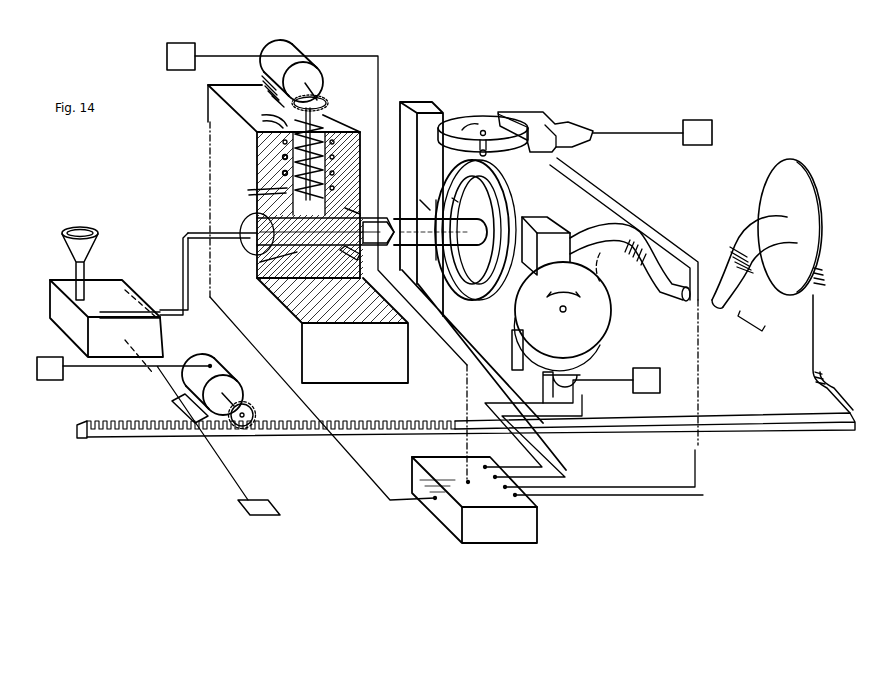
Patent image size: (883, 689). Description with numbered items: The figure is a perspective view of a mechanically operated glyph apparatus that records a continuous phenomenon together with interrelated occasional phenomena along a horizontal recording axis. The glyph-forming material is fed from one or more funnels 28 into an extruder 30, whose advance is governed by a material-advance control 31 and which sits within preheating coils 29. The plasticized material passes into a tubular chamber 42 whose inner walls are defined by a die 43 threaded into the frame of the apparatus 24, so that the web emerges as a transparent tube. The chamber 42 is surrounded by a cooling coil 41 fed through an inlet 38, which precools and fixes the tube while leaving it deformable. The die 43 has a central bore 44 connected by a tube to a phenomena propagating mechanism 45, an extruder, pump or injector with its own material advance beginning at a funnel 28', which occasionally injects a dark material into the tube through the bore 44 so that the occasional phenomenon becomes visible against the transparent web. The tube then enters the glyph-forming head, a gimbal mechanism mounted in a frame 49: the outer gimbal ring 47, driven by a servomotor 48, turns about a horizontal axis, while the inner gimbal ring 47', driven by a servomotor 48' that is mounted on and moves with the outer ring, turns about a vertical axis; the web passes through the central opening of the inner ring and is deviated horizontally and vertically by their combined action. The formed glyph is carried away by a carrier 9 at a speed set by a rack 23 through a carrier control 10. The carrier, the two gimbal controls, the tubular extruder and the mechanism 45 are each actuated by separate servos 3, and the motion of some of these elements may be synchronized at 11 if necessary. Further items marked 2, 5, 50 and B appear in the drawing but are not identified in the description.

The extruded filament 2 is at (456, 236).
The servo 3 is at (374, 279).
The conduit hose 5 is at (701, 267).
The carrier 9 is at (796, 162).
The carrier control 10 is at (238, 389).
The synchronizing means 11 is at (537, 531).
The rack 23 is at (148, 437).
The frame of the apparatus 24 is at (241, 220).
The funnel 28 is at (330, 141).
The funnel 28' is at (97, 255).
The preheating coils 29 is at (283, 156).
The extruder 30 is at (280, 170).
The material-advance control 31 is at (294, 43).
The inlet 38 is at (373, 166).
The cooling coil 41 is at (392, 236).
The tubular chamber 42 is at (360, 258).
The die 43 is at (257, 267).
The central bore 44 is at (362, 214).
The phenomena propagating mechanism 45 is at (114, 281).
The outer gimbal ring 47 is at (489, 230).
The inner gimbal ring 47' is at (409, 220).
The servomotor 48 is at (577, 328).
The servomotor 48' is at (568, 260).
The frame 49 is at (558, 224).
The tube end 50 is at (669, 308).
The point B is at (455, 200).